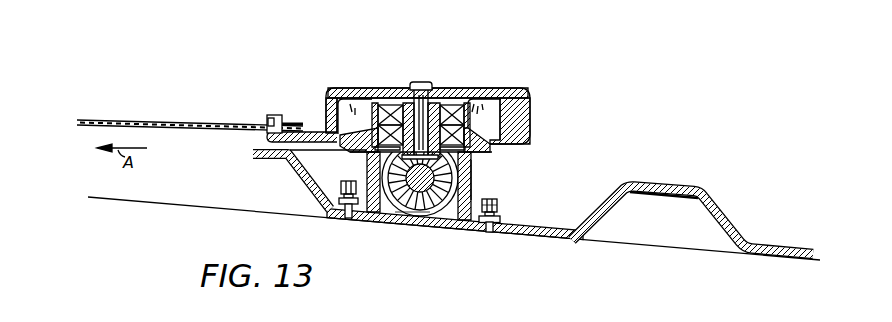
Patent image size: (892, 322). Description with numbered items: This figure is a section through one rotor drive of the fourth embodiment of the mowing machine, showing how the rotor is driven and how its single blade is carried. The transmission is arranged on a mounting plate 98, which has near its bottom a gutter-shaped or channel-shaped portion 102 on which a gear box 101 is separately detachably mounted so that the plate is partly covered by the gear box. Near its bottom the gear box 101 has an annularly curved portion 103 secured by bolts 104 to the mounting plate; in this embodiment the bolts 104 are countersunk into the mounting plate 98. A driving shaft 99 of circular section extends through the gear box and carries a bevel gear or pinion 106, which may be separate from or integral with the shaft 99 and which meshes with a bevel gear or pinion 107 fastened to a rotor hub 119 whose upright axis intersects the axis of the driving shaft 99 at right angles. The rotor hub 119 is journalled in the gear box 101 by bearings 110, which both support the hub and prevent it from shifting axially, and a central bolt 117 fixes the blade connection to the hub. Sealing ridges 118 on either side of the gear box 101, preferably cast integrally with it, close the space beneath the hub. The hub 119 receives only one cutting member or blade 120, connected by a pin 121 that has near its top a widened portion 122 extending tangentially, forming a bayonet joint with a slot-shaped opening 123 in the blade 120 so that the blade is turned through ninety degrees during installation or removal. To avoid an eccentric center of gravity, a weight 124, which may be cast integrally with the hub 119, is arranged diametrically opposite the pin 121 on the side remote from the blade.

The mounting plate 98 is at (589, 226).
The driving shaft 99 is at (406, 214).
The gear box 101 is at (478, 197).
The gutter-shaped or channel-shaped portion 102 is at (456, 224).
The annularly curved portion 103 is at (500, 211).
The bolts 104 is at (333, 214).
The bevel gear or pinion 106 is at (437, 176).
The bevel gear or pinion 107 is at (472, 161).
The bearings 110 is at (478, 94).
The central bolt 117 is at (418, 81).
The ridges 118 is at (352, 151).
The rotor hub 119 is at (437, 103).
The cutting member or blade 120 is at (158, 104).
The pin 121 is at (277, 115).
The widened portion 122 is at (278, 114).
The slot-shaped opening 123 is at (255, 130).
The weight 124 is at (532, 108).